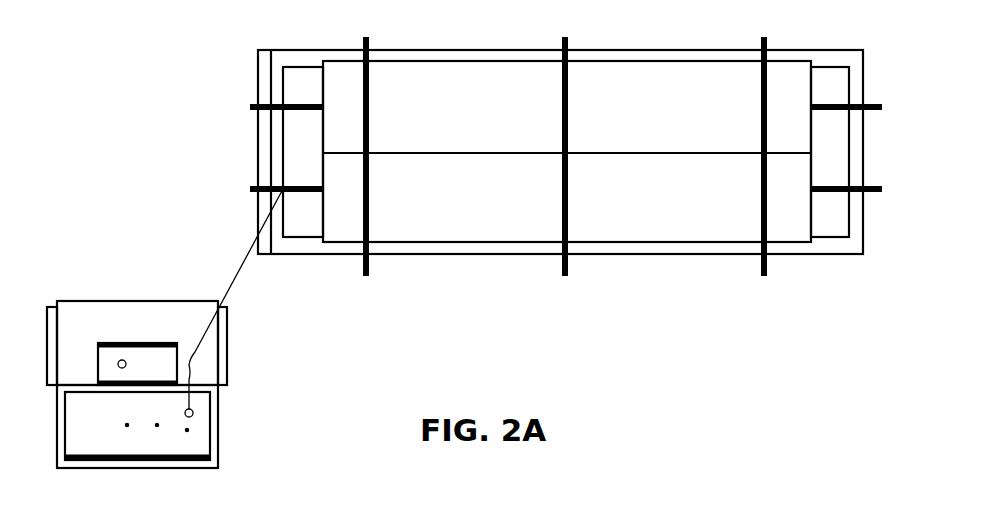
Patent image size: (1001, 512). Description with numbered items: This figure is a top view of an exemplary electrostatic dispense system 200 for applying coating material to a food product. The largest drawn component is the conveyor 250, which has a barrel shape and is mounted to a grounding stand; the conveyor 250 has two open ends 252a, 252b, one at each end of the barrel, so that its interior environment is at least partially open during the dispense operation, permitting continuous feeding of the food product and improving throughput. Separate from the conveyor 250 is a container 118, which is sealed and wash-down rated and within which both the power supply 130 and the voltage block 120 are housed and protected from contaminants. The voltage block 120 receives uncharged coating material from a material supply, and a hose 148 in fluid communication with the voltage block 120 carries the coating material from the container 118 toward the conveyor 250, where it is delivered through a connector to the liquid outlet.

The electrostatic dispense system 200 is at (205, 82).
The conveyor 250 is at (425, 254).
The open end 252a is at (323, 153).
The open end 252b is at (811, 153).
The container 118 is at (225, 377).
The power supply 130 is at (144, 332).
The voltage block 120 is at (215, 445).
The hose 148 is at (237, 273).